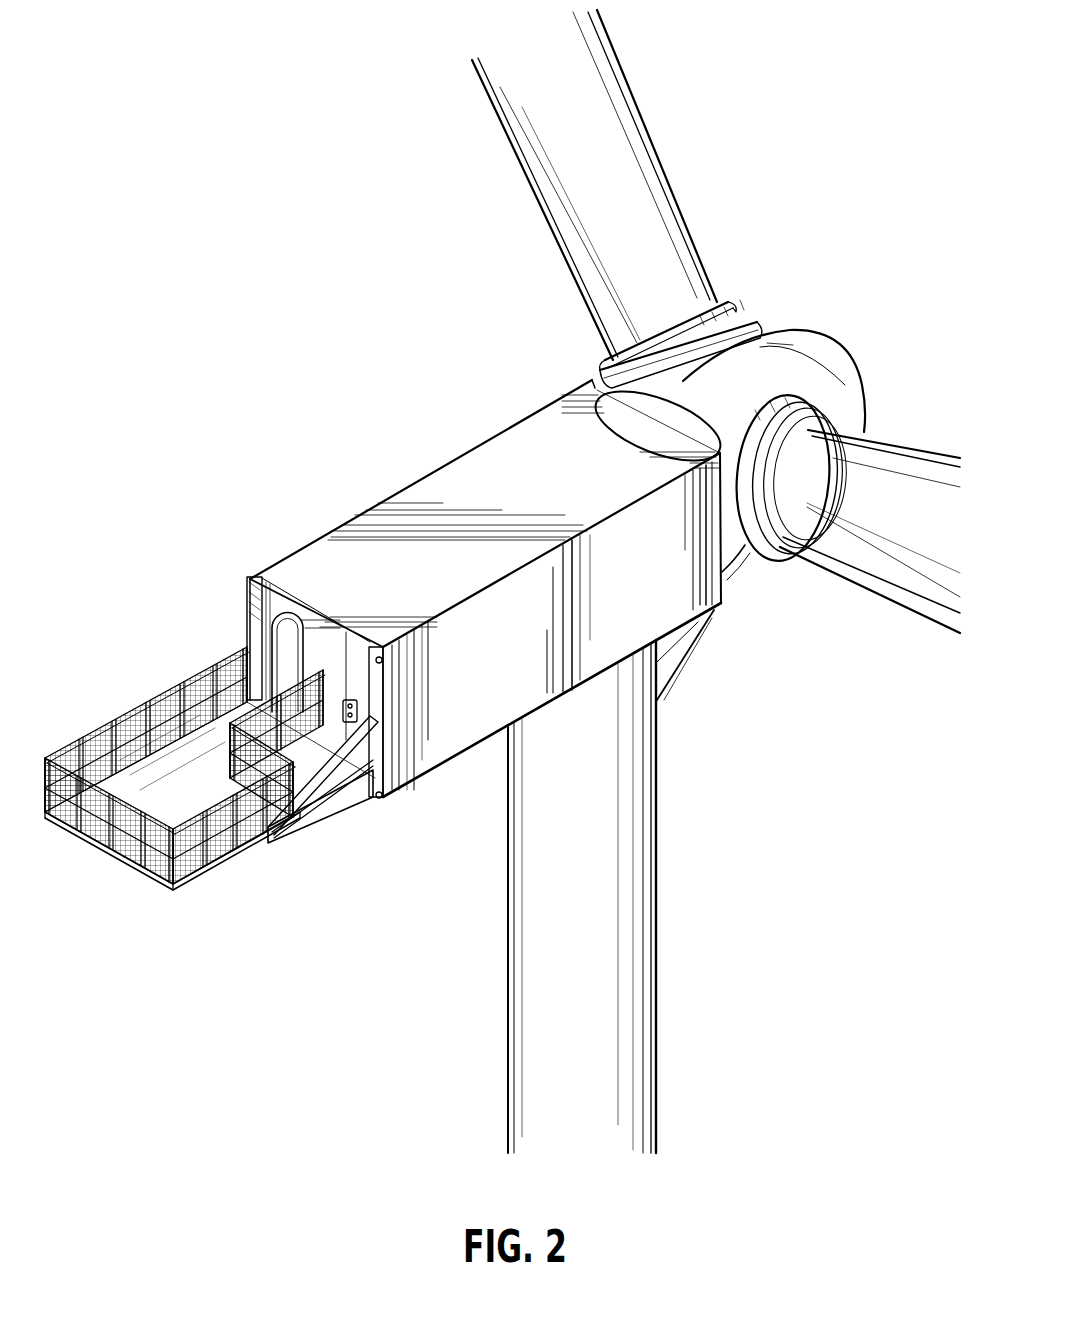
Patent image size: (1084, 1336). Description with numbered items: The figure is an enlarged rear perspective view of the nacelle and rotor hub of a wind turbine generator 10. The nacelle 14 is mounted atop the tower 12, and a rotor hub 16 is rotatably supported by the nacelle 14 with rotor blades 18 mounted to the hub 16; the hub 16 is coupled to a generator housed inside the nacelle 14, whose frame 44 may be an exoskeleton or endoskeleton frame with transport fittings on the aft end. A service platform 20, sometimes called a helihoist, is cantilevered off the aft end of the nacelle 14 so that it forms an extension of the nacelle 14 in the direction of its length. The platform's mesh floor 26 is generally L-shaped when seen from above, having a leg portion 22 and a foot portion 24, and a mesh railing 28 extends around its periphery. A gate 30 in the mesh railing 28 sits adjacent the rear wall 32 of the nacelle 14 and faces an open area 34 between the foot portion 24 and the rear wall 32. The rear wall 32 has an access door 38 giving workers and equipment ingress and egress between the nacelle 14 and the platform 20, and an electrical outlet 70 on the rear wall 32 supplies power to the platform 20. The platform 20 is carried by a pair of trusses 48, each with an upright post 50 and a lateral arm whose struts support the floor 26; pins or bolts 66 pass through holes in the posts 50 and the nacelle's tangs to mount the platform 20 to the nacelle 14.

The wind turbine generator 10 is at (262, 221).
The tower 12 is at (660, 985).
The nacelle 14 is at (467, 604).
The rotor hub 16 is at (810, 334).
The rotor blades 18 is at (642, 116).
The service platform 20 is at (210, 757).
The leg portion 22 is at (170, 773).
The foot portion 24 is at (200, 872).
The floor 26 is at (160, 811).
The mesh railing 28 is at (128, 852).
The gate 30 is at (270, 700).
The rear wall 32 is at (325, 612).
The open area 34 is at (345, 750).
The access door 38 is at (283, 632).
The frame 44 is at (336, 518).
The trusses 48 is at (335, 830).
The upright post 50 is at (248, 578).
The pins or bolts 66 is at (385, 661).
The electrical outlet 70 is at (360, 706).